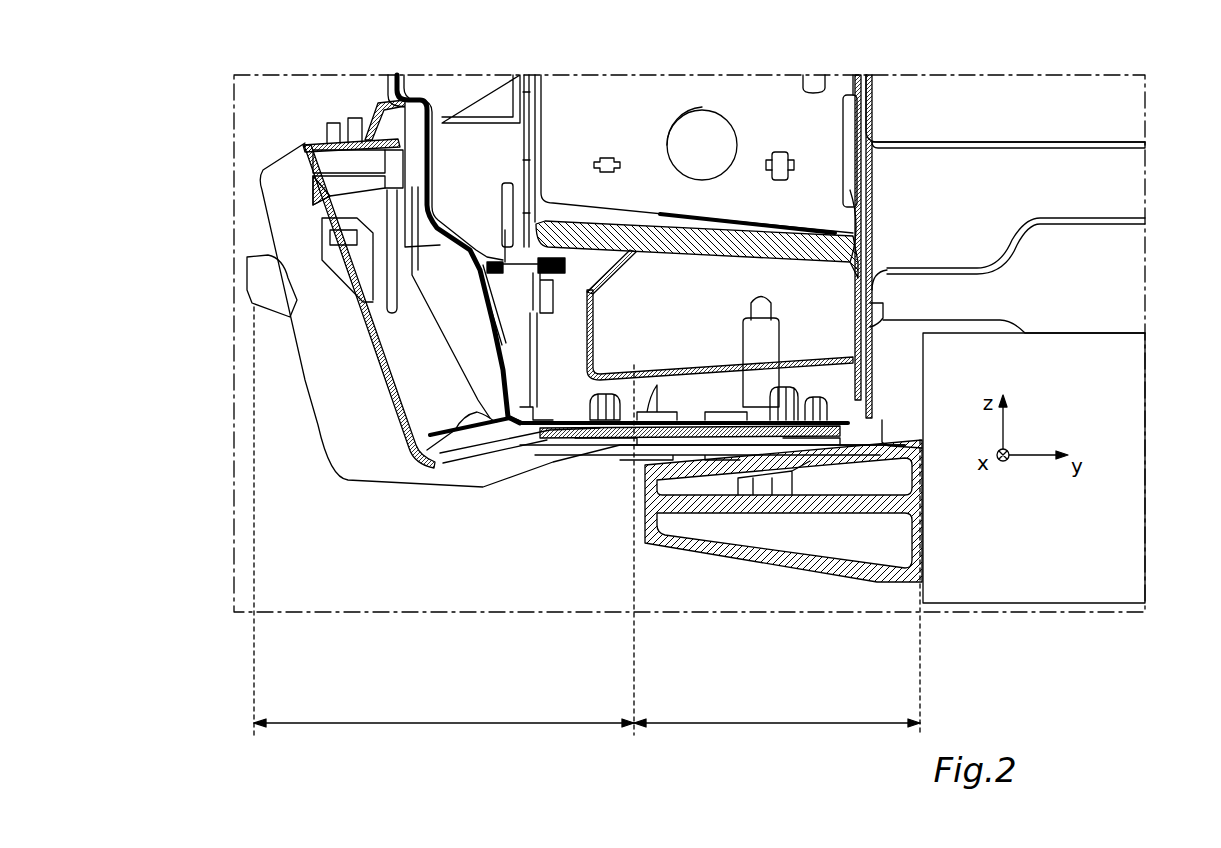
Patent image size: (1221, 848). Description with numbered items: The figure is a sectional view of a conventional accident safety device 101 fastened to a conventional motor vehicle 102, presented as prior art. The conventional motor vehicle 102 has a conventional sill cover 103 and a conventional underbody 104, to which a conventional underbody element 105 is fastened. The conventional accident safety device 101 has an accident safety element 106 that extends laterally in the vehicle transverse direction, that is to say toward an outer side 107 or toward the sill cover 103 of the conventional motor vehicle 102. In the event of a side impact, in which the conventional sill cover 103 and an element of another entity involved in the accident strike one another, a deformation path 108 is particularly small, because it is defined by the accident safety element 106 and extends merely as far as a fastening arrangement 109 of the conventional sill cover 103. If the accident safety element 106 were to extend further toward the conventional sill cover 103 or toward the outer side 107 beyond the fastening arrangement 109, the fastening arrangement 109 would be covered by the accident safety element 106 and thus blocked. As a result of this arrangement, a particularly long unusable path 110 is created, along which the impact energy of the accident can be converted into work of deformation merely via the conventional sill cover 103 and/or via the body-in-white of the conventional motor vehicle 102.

The conventional accident safety device 101 is at (815, 583).
The conventional motor vehicle 102 is at (1112, 183).
The conventional sill cover 103 is at (322, 420).
The conventional underbody 104 is at (997, 622).
The conventional underbody element 105 is at (1112, 520).
The accident safety element 106 is at (746, 558).
The outer side 107 is at (258, 218).
The deformation path 108 is at (875, 722).
The fastening arrangement 109 is at (607, 385).
The unusable path 110 is at (430, 722).